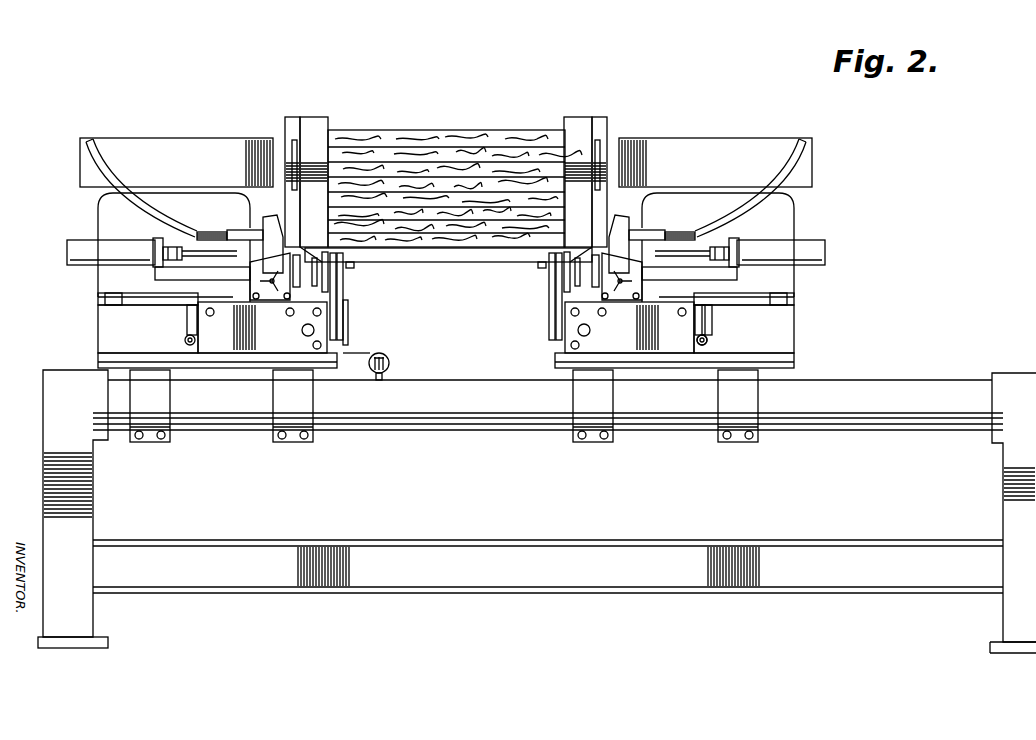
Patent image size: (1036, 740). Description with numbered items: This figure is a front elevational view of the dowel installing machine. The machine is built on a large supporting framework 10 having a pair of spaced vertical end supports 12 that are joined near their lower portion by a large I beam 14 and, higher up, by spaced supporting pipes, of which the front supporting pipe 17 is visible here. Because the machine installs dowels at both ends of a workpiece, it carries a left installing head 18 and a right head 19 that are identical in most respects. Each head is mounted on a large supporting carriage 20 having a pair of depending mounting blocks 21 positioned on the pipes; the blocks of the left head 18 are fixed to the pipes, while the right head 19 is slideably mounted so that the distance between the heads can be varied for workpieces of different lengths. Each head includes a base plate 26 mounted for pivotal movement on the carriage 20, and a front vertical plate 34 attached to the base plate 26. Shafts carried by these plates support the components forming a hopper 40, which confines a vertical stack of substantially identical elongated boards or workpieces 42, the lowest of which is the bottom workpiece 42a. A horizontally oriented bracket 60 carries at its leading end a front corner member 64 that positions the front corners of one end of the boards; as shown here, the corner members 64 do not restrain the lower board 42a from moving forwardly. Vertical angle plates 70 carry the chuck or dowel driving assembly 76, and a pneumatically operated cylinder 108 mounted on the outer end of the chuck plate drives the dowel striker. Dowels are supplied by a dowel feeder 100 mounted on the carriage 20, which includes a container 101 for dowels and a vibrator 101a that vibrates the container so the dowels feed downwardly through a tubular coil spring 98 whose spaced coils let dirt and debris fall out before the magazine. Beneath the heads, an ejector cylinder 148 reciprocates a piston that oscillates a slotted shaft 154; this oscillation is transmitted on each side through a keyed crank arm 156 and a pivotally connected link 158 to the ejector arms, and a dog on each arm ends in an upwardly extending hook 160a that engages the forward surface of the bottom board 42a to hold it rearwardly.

The supporting framework 10 is at (884, 540).
The vertical end supports 12 is at (93, 490).
The I beam 14 is at (436, 528).
The supporting pipe 17 is at (937, 364).
The left installing head 18 is at (181, 323).
The right head 19 is at (705, 330).
The supporting carriage 20 is at (131, 364).
The mounting blocks 21 is at (734, 442).
The base plate 26 is at (184, 346).
The front vertical plate 34 is at (248, 345).
The hopper 40 is at (331, 128).
The workpieces 42 is at (430, 146).
The bottom workpiece 42a is at (455, 262).
The bracket 60 is at (290, 137).
The front corner member 64 is at (316, 117).
The vertical angle plates 70 is at (277, 265).
The chuck or dowel driving assembly 76 is at (238, 230).
The tubular coil spring 98 is at (125, 203).
The dowel feeder 100 is at (408, 148).
The container 101 is at (212, 148).
The vibrator 101a is at (98, 228).
The pneumatically operated cylinder 108 is at (87, 268).
The ejector cylinder 148 is at (392, 364).
The slotted shaft 154 is at (359, 358).
The keyed crank arm 156 is at (341, 344).
The link 158 is at (344, 296).
The hook 160a is at (352, 265).